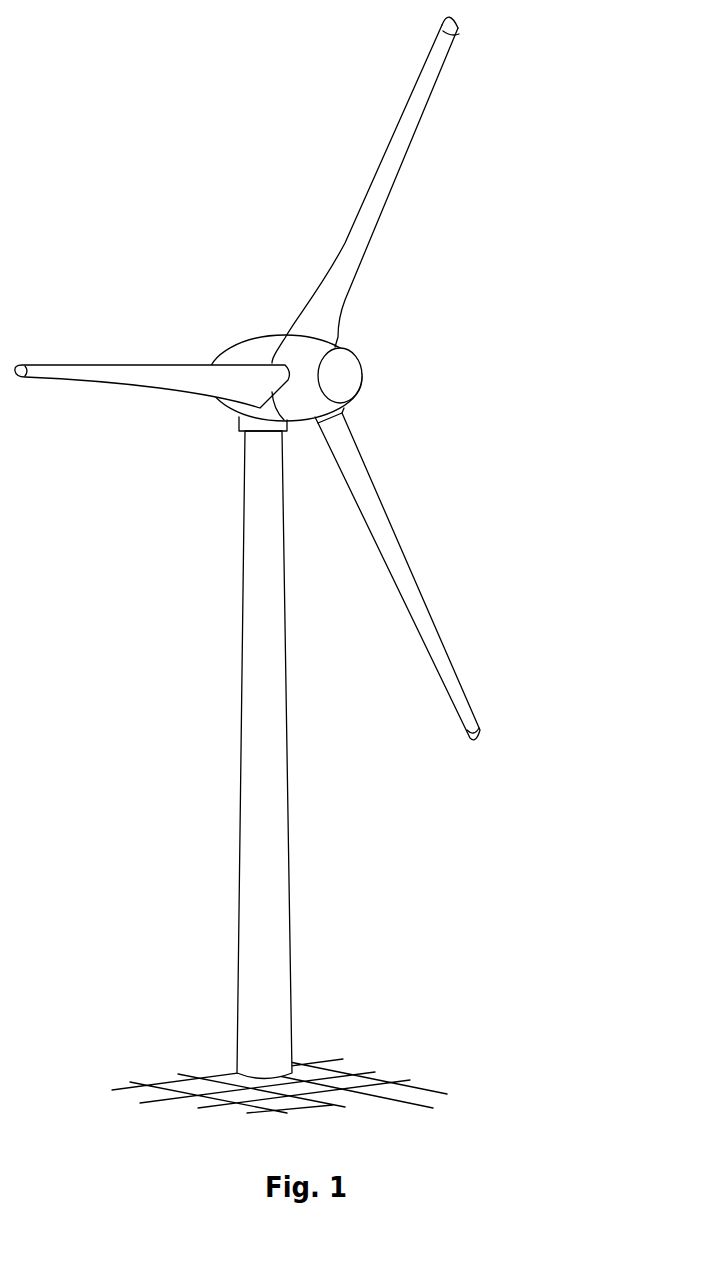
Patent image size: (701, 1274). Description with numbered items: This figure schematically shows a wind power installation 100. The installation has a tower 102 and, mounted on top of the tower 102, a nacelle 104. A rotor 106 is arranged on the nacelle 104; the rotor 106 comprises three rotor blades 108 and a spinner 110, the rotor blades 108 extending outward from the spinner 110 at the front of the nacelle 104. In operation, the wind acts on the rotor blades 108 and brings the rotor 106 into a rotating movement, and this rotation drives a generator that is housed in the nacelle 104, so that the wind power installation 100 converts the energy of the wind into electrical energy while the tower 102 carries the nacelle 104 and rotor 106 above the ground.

The wind power installation 100 is at (295, 565).
The tower 102 is at (270, 852).
The nacelle 104 is at (258, 350).
The rotor 106 is at (295, 378).
The rotor blades 108 is at (402, 138).
The spinner 110 is at (343, 378).